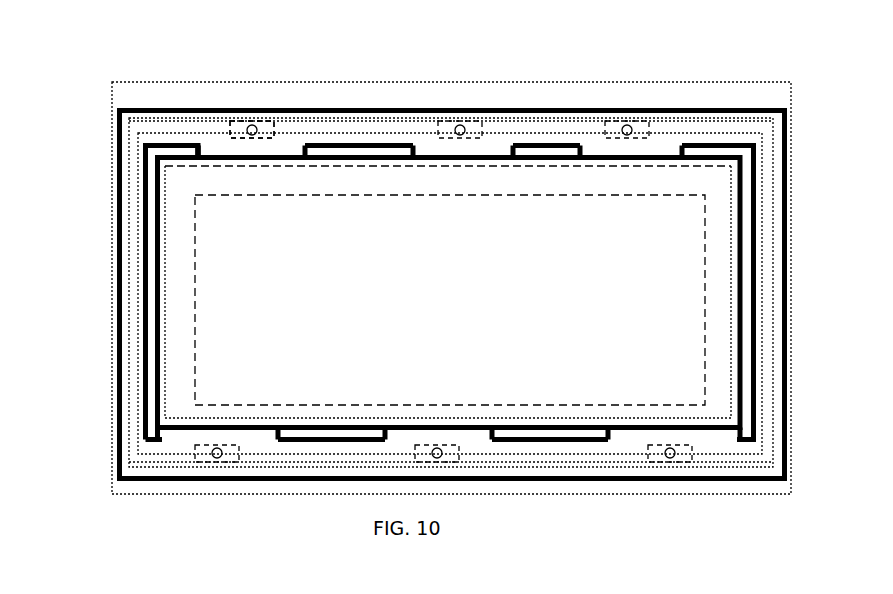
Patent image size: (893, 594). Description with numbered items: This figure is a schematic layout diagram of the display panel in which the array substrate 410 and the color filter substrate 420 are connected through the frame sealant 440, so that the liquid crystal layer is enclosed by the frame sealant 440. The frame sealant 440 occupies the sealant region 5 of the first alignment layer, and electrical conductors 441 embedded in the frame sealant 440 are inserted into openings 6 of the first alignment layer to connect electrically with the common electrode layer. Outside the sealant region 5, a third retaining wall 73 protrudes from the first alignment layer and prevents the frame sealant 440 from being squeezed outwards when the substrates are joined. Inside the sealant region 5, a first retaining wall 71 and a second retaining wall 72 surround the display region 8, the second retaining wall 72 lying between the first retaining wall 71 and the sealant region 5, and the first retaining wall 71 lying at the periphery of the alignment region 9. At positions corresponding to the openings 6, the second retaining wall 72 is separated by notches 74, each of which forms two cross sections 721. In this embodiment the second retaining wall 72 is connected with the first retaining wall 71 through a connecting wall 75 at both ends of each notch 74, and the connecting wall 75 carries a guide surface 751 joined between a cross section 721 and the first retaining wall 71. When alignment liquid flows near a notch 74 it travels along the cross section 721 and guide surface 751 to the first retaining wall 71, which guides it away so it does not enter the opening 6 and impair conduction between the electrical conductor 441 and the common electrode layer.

The array substrate 410 is at (141, 82).
The color filter substrate 420 is at (116, 192).
The third retaining wall 73 is at (127, 223).
The frame sealant 440 is at (136, 252).
The electrical conductor 441 is at (252, 125).
The opening 6 is at (272, 122).
The sealant region 5 is at (398, 240).
The second retaining wall 72 is at (398, 240).
The cross section 721 is at (212, 155).
The connecting wall 75 is at (197, 147).
The guide surface 751 is at (215, 160).
The first retaining wall 71 is at (155, 335).
The notch 74 is at (265, 140).
The alignment region 9 is at (163, 367).
The display region 8 is at (193, 398).